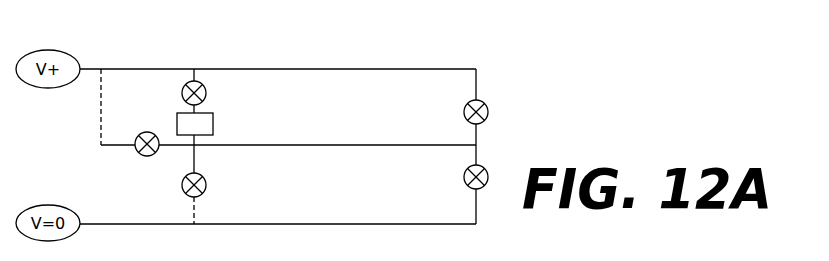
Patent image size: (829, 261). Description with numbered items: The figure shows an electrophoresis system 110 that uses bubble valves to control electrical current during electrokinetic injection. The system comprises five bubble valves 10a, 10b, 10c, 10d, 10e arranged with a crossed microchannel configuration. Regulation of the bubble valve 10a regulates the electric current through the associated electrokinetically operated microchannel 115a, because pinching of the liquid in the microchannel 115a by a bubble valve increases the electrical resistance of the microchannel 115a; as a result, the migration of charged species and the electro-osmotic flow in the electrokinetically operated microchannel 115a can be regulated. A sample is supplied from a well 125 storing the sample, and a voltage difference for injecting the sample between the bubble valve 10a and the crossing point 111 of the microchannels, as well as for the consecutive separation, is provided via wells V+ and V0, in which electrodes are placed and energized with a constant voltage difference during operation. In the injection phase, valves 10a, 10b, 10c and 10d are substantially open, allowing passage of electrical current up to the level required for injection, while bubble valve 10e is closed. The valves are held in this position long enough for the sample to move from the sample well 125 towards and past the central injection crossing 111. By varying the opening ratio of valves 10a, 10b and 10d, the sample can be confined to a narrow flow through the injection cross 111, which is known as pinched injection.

The electrophoresis system 110 is at (497, 45).
The electrokinetically operated microchannel 115a is at (368, 142).
The bubble valve 10a is at (206, 96).
The bubble valve 10b is at (150, 157).
The bubble valve 10c is at (206, 191).
The bubble valve 10d is at (488, 109).
The bubble valve 10e is at (462, 177).
The sample well 125 is at (214, 121).
The crossing point of the microchannels 111 is at (197, 150).